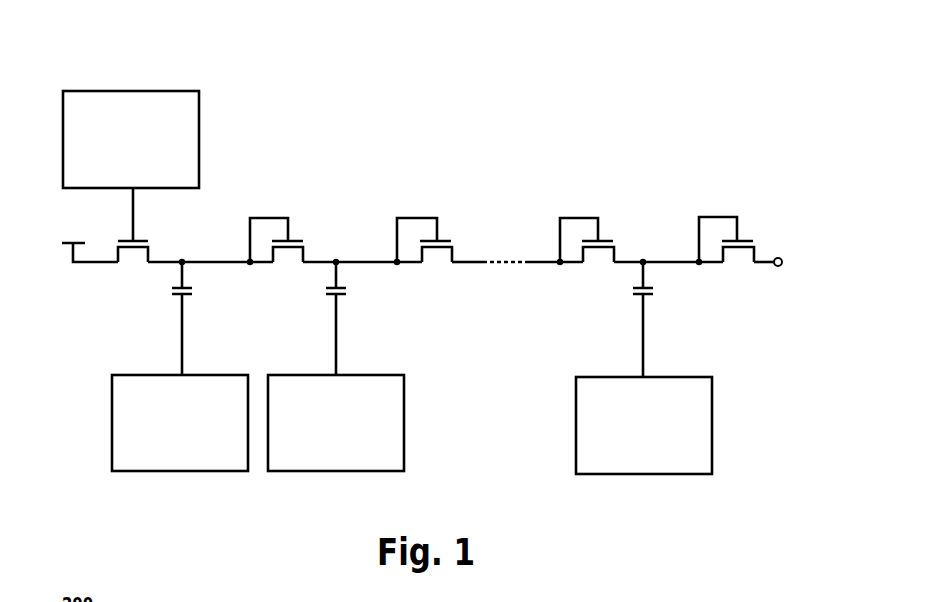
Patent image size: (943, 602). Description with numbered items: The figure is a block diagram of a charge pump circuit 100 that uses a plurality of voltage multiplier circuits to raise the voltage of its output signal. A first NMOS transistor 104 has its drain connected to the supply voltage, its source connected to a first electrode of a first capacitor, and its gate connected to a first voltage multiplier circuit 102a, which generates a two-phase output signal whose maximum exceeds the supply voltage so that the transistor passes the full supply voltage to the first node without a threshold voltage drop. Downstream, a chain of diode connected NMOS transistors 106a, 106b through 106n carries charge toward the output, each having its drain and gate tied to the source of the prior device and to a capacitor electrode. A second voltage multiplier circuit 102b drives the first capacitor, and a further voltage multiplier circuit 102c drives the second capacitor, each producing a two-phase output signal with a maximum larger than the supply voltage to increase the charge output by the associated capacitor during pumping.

The charge pump circuit 100 is at (702, 88).
The first voltage multiplier circuit 102a is at (131, 139).
The second voltage multiplier circuit 102b is at (180, 423).
The voltage multiplier circuit 102c is at (336, 423).
The first NMOS transistor 104 is at (155, 236).
The first diode connected NMOS transistor 106a is at (303, 233).
The diode connected NMOS transistor 106b is at (455, 233).
The diode connected NMOS transistor 106n is at (748, 235).